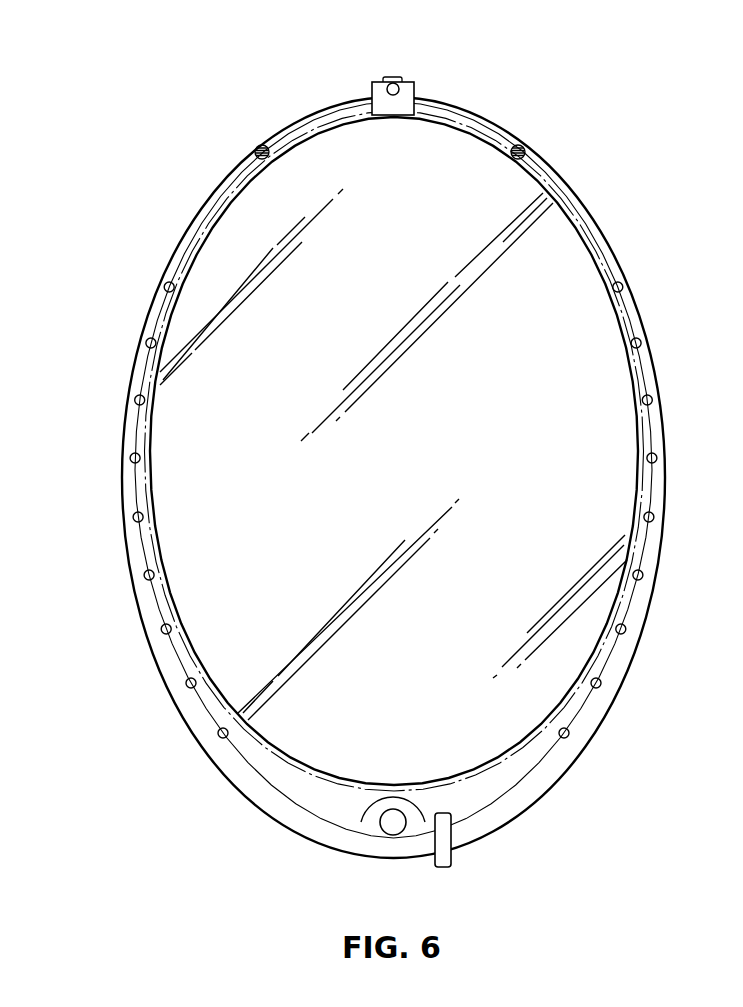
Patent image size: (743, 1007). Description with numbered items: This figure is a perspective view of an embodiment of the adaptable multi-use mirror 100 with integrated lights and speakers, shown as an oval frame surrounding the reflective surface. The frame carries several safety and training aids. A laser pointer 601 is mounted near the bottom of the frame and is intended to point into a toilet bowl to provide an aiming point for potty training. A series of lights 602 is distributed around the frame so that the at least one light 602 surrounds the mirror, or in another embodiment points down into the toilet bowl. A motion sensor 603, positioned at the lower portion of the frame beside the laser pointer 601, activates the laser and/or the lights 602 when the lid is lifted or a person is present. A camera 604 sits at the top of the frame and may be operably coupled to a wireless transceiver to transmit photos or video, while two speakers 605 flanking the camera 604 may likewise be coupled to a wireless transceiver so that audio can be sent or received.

The adaptable multi-use mirror 100 is at (661, 180).
The laser pointer 601 is at (452, 857).
The light 602 is at (599, 679).
The motion sensor 603 is at (393, 836).
The camera 604 is at (405, 76).
The speaker 605 is at (256, 148).